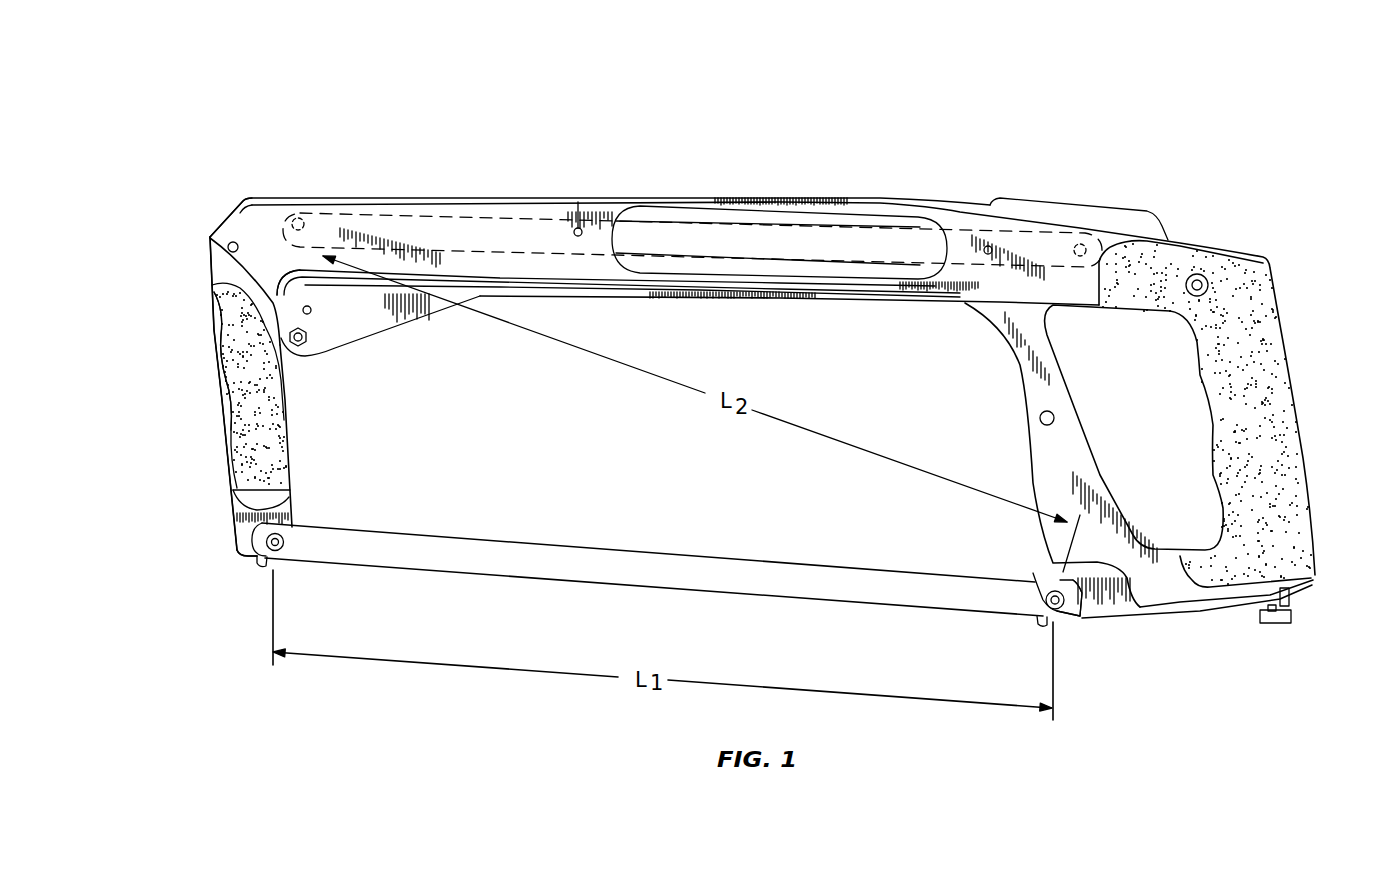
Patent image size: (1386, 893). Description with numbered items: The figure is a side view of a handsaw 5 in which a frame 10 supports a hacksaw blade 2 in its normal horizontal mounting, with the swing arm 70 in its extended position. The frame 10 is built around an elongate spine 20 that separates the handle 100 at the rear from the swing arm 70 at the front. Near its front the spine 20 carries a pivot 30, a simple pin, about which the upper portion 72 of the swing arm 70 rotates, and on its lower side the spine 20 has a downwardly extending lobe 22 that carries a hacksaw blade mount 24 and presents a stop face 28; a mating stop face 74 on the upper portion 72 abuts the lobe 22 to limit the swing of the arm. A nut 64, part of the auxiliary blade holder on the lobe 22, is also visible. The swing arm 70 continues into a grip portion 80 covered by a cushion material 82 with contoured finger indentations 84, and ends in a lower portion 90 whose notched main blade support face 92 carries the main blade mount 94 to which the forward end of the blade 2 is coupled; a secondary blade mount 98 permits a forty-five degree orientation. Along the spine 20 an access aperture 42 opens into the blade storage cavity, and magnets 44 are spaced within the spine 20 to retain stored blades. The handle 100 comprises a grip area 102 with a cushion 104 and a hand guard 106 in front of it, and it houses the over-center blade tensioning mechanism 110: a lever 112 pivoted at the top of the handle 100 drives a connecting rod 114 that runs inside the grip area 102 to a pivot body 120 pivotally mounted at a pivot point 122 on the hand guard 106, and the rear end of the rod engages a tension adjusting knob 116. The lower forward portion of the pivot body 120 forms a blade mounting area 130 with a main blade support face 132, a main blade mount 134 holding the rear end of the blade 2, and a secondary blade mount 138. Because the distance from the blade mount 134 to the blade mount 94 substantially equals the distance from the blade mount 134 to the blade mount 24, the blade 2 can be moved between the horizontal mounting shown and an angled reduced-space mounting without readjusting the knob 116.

The hacksaw blade 2 is at (628, 572).
The handsaw 5 is at (688, 105).
The frame 10 is at (328, 170).
The spine 20 is at (956, 224).
The lobe 22 is at (327, 338).
The hacksaw blade mount 24 is at (311, 311).
The stop face 28 is at (297, 403).
The pivot 30 is at (210, 237).
The access aperture 42 is at (768, 200).
The magnets 44 is at (579, 238).
The nut 64 is at (303, 342).
The swing arm 70 is at (210, 276).
The upper portion 72 is at (178, 246).
The stop face 74 is at (298, 393).
The grip portion 80 is at (176, 366).
The cushion material 82 is at (238, 405).
The contoured finger indentations 84 is at (228, 430).
The lower portion 90 is at (200, 492).
The main blade support face 92 is at (243, 534).
The main blade mount 94 is at (288, 533).
The secondary blade mount 98 is at (262, 566).
The handle 100 is at (1247, 221).
The grip area 102 is at (1278, 369).
The cushion 104 is at (1285, 428).
The hand guard 106 is at (1033, 383).
The blade tensioning mechanism 110 is at (1266, 656).
The lever 112 is at (1072, 200).
The connecting rod 114 is at (1285, 598).
The tension adjusting knob 116 is at (1292, 619).
The pivot body 120 is at (1130, 617).
The pivot point 122 is at (1041, 425).
The blade mounting area 130 is at (1043, 642).
The main blade support face 132 is at (1075, 605).
The main blade mount 134 is at (1050, 592).
The secondary blade mount 138 is at (1035, 622).